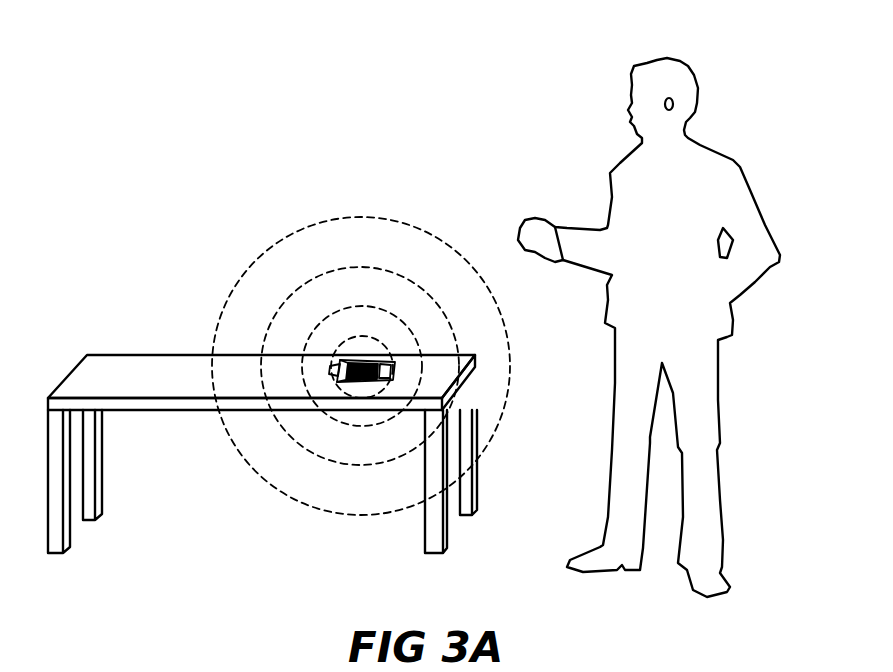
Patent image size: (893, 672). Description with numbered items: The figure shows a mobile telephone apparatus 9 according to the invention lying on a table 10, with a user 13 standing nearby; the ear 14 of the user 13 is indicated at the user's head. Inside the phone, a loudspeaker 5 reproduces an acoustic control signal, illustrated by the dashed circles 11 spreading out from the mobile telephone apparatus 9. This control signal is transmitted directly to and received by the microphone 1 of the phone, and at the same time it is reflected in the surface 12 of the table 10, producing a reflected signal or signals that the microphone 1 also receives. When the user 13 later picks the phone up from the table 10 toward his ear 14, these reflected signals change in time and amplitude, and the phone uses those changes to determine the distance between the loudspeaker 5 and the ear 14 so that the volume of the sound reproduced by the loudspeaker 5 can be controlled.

The microphone 1 is at (390, 382).
The loudspeaker 5 is at (343, 360).
The mobile telephone apparatus 9 is at (350, 382).
The table 10 is at (72, 328).
The dashed circles 11 is at (343, 218).
The surface 12 is at (165, 367).
The user 13 is at (720, 113).
The ear 14 is at (669, 97).